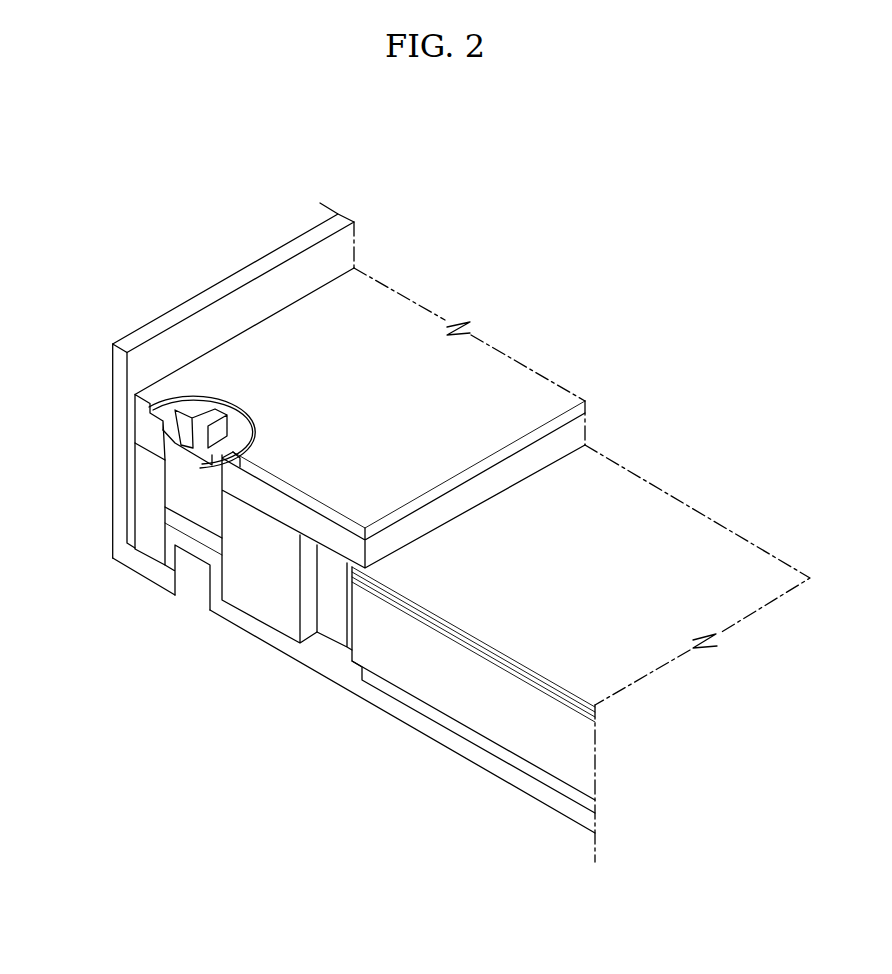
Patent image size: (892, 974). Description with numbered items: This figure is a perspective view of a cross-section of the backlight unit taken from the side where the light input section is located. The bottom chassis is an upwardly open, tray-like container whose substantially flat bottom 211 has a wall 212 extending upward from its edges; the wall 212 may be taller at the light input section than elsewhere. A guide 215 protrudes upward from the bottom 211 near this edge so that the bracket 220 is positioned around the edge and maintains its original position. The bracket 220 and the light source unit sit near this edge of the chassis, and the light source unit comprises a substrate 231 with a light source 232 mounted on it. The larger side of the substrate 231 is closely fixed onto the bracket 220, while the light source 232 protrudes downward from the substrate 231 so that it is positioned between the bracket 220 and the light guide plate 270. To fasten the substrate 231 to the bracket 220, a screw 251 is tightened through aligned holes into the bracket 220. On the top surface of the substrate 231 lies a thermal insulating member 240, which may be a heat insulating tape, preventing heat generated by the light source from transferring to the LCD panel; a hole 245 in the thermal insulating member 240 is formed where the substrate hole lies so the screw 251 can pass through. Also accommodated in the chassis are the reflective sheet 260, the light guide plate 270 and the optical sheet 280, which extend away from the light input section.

The bottom 211 is at (387, 712).
The wall 212 is at (114, 445).
The guide 215 is at (196, 551).
The bracket 220 is at (153, 545).
The substrate 231 is at (283, 515).
The light source 232 is at (337, 628).
The thermal insulating member 240 is at (290, 333).
The hole 245 is at (170, 397).
The screw 251 is at (200, 403).
The reflective sheet 260 is at (440, 718).
The light guide plate 270 is at (485, 722).
The optical sheet 280 is at (653, 484).